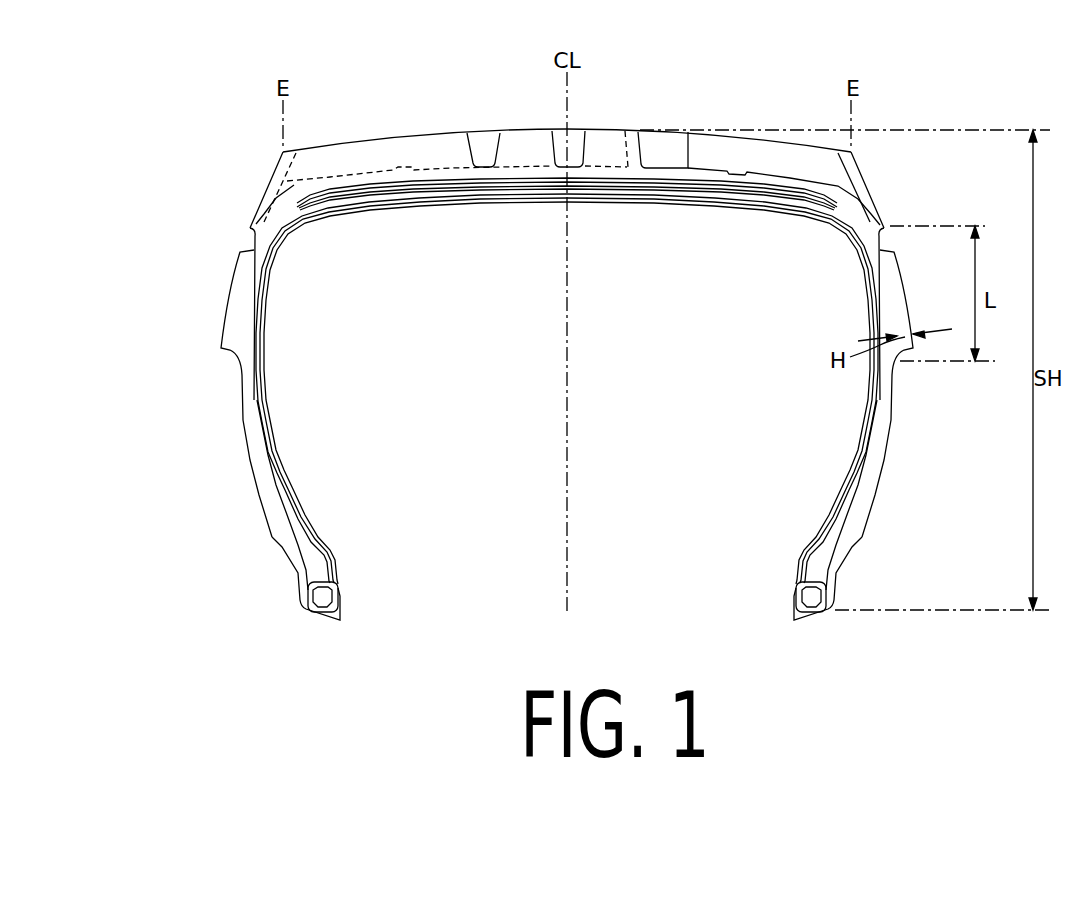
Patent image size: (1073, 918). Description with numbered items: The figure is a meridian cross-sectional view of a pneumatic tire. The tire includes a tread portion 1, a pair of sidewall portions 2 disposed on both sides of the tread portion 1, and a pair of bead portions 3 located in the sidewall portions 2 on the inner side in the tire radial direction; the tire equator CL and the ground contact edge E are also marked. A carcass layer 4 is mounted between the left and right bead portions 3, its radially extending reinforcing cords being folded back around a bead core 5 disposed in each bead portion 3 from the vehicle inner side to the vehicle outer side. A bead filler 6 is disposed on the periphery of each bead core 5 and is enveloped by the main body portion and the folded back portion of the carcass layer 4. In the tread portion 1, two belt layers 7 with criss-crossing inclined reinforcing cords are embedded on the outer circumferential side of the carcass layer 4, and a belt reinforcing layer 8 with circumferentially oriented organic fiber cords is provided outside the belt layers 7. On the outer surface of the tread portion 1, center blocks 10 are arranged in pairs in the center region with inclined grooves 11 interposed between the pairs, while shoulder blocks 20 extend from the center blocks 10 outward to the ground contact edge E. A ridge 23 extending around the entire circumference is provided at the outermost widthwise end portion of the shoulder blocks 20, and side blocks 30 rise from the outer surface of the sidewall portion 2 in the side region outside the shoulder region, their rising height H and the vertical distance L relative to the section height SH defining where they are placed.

The tread portion 1 is at (643, 110).
The sidewall portion 2 is at (229, 384).
The bead portion 3 is at (292, 597).
The carcass layer 4 is at (843, 213).
The bead core 5 is at (323, 596).
The bead filler 6 is at (307, 537).
The belt layer 7 is at (667, 183).
The belt reinforcing layer 8 is at (773, 186).
The center block 10 is at (540, 130).
The inclined groove 11 is at (573, 145).
The shoulder block 20 is at (383, 138).
The ridge 23 is at (250, 228).
The side block 30 is at (227, 297).